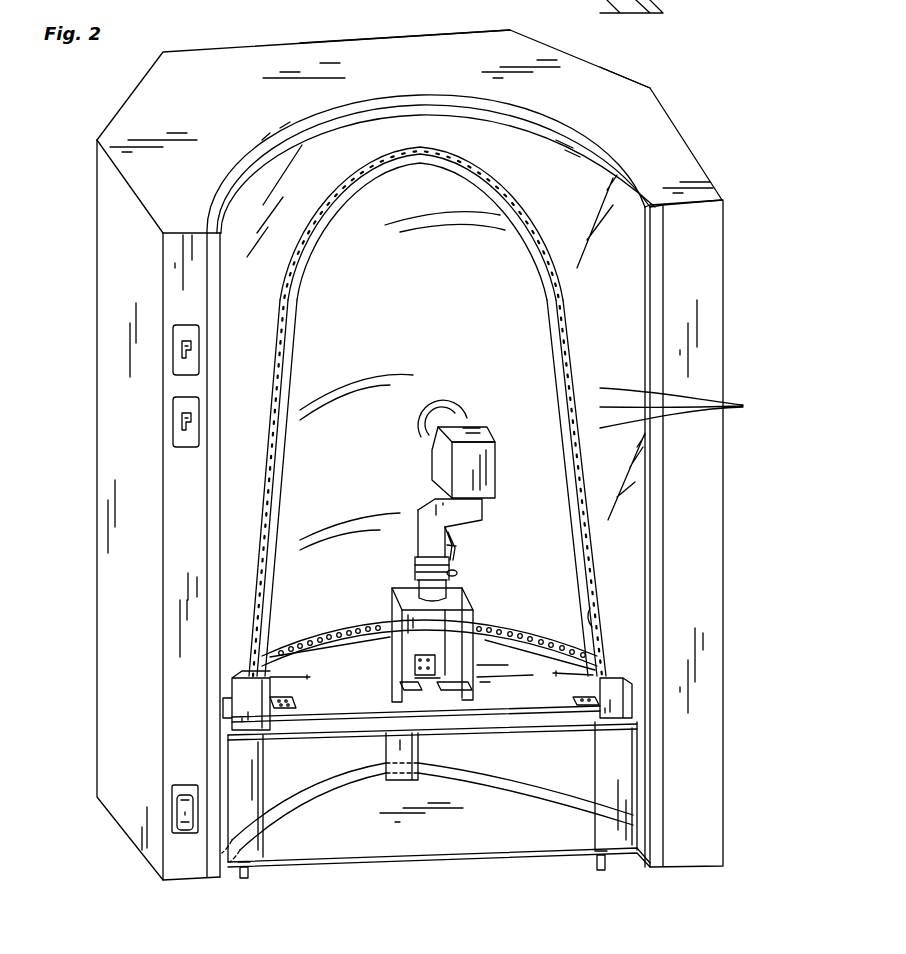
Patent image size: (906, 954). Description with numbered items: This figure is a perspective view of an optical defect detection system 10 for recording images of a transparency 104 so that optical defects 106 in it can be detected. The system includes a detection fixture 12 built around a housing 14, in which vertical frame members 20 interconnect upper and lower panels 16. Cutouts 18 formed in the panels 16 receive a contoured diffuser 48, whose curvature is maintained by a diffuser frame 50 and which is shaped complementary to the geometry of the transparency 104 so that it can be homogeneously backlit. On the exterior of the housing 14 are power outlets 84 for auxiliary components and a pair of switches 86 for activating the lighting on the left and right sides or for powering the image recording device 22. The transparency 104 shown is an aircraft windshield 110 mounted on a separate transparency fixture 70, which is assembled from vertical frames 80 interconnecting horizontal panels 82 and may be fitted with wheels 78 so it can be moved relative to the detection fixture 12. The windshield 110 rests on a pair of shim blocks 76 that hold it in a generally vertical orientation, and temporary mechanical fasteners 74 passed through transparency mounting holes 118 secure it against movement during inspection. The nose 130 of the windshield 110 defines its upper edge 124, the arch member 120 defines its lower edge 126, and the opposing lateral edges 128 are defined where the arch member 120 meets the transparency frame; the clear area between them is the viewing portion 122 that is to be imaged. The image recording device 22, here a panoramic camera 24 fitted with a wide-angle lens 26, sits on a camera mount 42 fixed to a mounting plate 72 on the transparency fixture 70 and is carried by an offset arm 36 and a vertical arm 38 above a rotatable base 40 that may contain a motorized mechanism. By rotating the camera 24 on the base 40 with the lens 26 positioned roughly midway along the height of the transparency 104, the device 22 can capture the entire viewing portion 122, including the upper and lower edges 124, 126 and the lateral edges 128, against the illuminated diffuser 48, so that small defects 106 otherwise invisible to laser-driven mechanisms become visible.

The optical defect detection system 10 is at (442, 455).
The detection fixture 12 is at (696, 102).
The housing 14 is at (690, 153).
The panel 16 is at (600, 80).
The cutouts 18 is at (643, 86).
The vertical frame members 20 is at (183, 563).
The image recording device 22 is at (500, 462).
The panoramic camera 24 is at (488, 462).
The wide-angle lens 26 is at (468, 403).
The offset arm 36 is at (430, 513).
The vertical arm 38 is at (420, 542).
The rotatable base 40 is at (418, 578).
The camera mount 42 is at (467, 604).
The diffuser 48 is at (634, 226).
The diffuser frame 50 is at (650, 185).
The transparency fixture 70 is at (487, 866).
The mounting plate 72 is at (366, 674).
The temporary mechanical fasteners 74 is at (305, 678).
The shim blocks 76 is at (243, 707).
The wheels 78 is at (247, 880).
The vertical frames 80 is at (238, 763).
The horizontal panels 82 is at (556, 727).
The power outlets 84 is at (172, 823).
The switches 86 is at (175, 407).
The transparency 104 is at (421, 226).
The optical defects 106 is at (482, 268).
The windshield 110 is at (418, 306).
The transparency mounting holes 118 is at (689, 408).
The arch member 120 is at (429, 629).
The viewing portion 122 is at (380, 339).
The upper edge 124 is at (431, 116).
The lower edge 126 is at (305, 641).
The lateral edges 128 is at (257, 640).
The nose 130 is at (428, 150).